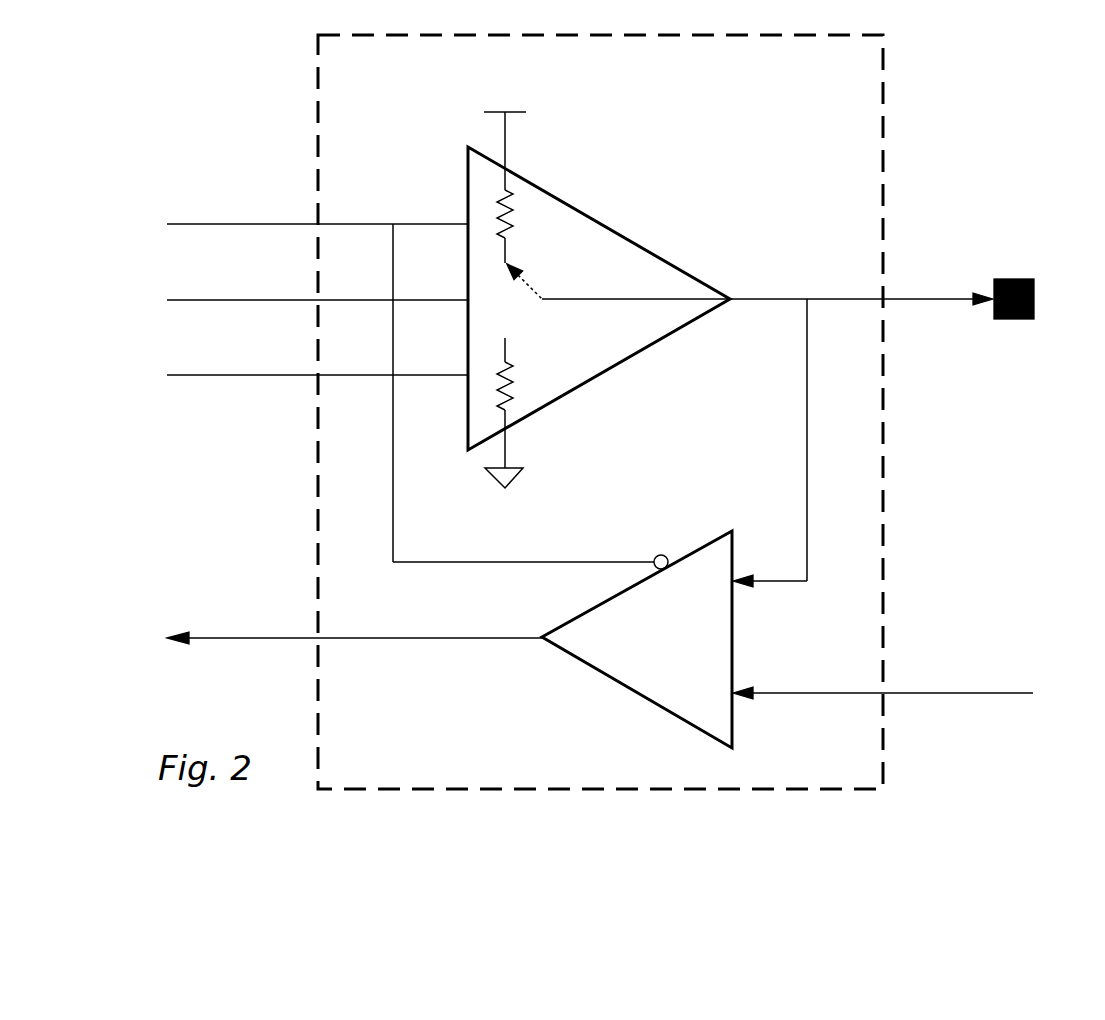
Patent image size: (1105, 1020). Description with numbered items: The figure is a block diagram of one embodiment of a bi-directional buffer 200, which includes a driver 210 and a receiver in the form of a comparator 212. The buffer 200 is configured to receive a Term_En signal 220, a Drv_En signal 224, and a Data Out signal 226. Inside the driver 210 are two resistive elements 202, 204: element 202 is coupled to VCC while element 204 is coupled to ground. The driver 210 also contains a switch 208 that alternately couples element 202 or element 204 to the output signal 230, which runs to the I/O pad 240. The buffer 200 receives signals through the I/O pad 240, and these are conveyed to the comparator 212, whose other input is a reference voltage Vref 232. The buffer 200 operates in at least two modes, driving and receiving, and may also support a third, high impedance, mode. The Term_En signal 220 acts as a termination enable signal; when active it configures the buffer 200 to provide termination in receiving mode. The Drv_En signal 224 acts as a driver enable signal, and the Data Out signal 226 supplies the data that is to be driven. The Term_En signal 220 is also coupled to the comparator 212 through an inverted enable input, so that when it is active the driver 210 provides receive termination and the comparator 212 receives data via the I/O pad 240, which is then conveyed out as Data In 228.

The bi-directional buffer 200 is at (370, 73).
The resistive element 202 is at (517, 203).
The resistive element 204 is at (517, 392).
The switch 208 is at (532, 287).
The driver 210 is at (660, 252).
The comparator 212 is at (637, 693).
The Term_En signal 220 is at (204, 228).
The Drv_En signal 224 is at (204, 303).
The Data Out signal 226 is at (204, 378).
The Data In signal 228 is at (204, 641).
The output signal 230 is at (769, 298).
The reference voltage input Vref 232 is at (953, 695).
The I/O pad 240 is at (1015, 319).